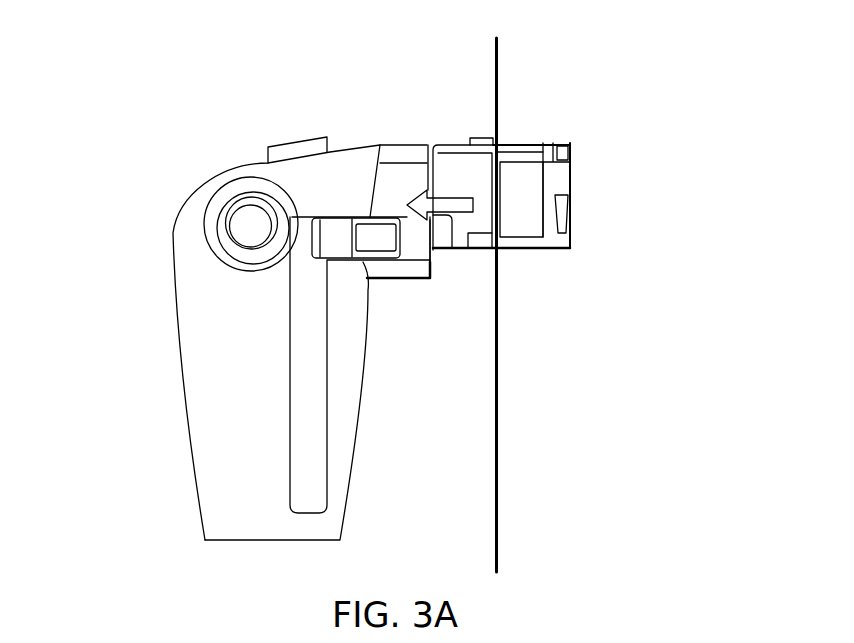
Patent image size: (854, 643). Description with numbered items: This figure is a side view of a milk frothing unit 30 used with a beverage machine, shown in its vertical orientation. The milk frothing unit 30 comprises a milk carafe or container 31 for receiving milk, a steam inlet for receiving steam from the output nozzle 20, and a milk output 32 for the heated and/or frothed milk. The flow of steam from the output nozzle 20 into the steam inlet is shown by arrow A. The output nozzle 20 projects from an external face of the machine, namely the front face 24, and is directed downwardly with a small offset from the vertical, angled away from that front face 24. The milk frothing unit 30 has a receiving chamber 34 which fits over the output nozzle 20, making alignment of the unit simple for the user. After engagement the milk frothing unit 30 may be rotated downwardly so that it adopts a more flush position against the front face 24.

The output nozzle 20 is at (460, 280).
The front face 24 is at (495, 63).
The milk frothing unit 30 is at (233, 312).
The milk carafe or container 31 is at (187, 425).
The milk output 32 is at (223, 223).
The receiving chamber 34 is at (408, 143).
The arrow indicating steam flow A is at (443, 252).